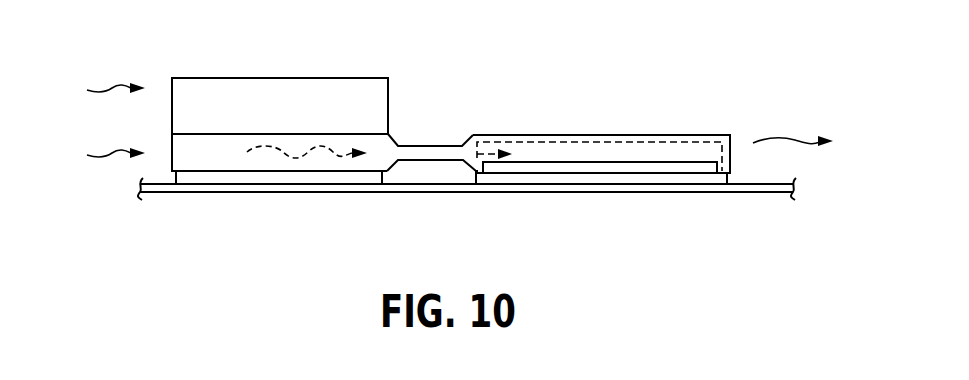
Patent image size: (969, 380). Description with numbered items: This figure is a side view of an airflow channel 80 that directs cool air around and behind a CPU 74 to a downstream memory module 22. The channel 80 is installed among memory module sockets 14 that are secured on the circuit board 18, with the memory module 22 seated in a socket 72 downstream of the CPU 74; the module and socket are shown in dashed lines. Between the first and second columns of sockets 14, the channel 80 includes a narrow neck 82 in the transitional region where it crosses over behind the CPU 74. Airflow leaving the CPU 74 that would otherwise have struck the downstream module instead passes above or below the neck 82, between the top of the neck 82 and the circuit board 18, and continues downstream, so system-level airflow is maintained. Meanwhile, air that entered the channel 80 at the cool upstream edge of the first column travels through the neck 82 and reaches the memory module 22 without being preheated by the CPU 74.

The memory module socket 14 is at (183, 177).
The circuit board 18 is at (442, 193).
The memory module 22 is at (613, 141).
The socket 72 is at (717, 177).
The CPU 74 is at (348, 78).
The airflow channel 80 is at (550, 89).
The neck 82 is at (429, 145).